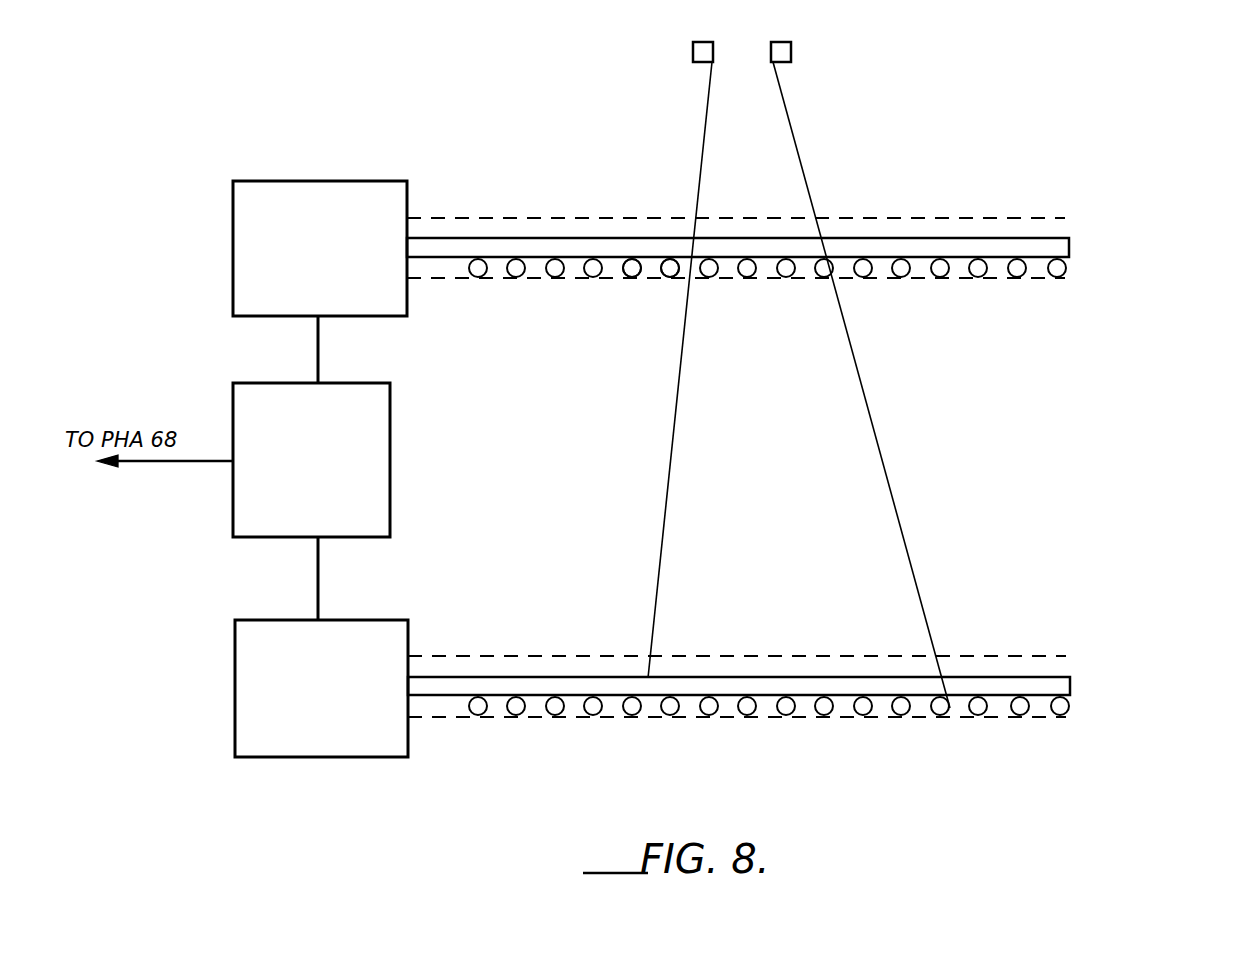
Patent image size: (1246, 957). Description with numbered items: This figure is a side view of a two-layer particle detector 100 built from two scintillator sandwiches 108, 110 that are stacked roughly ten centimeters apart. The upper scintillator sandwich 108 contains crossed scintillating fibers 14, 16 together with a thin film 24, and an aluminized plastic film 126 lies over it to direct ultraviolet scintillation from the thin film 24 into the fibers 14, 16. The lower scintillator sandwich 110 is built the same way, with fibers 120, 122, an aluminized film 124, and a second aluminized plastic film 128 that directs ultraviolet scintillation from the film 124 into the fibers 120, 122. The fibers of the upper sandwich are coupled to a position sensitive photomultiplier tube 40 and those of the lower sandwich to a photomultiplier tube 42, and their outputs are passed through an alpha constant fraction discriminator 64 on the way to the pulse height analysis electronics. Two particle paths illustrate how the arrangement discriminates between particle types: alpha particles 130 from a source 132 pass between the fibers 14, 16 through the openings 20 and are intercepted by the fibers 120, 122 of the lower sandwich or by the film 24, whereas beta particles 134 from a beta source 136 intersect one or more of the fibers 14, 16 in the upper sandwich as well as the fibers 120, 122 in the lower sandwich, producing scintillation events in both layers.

The fibers 14 is at (1023, 243).
The fibers 16 is at (1065, 268).
The openings 20 is at (683, 280).
The thin film 24 is at (1000, 282).
The photomultiplier tube 40 is at (233, 245).
The photomultiplier tube 42 is at (235, 692).
The alpha constant fraction discriminator 64 is at (233, 522).
The detection system 100 is at (1158, 357).
The scintillator sandwich 108 is at (797, 255).
The scintillator sandwich 110 is at (807, 687).
The fibers 120 is at (1053, 686).
The fibers 122 is at (1068, 708).
The aluminized film 124 is at (1000, 718).
The aluminized plastic film 126 is at (880, 214).
The aluminized plastic film 128 is at (980, 655).
The alpha particles 130 is at (676, 438).
The source 132 is at (703, 42).
The beta particles 134 is at (890, 480).
The beta source 136 is at (781, 42).